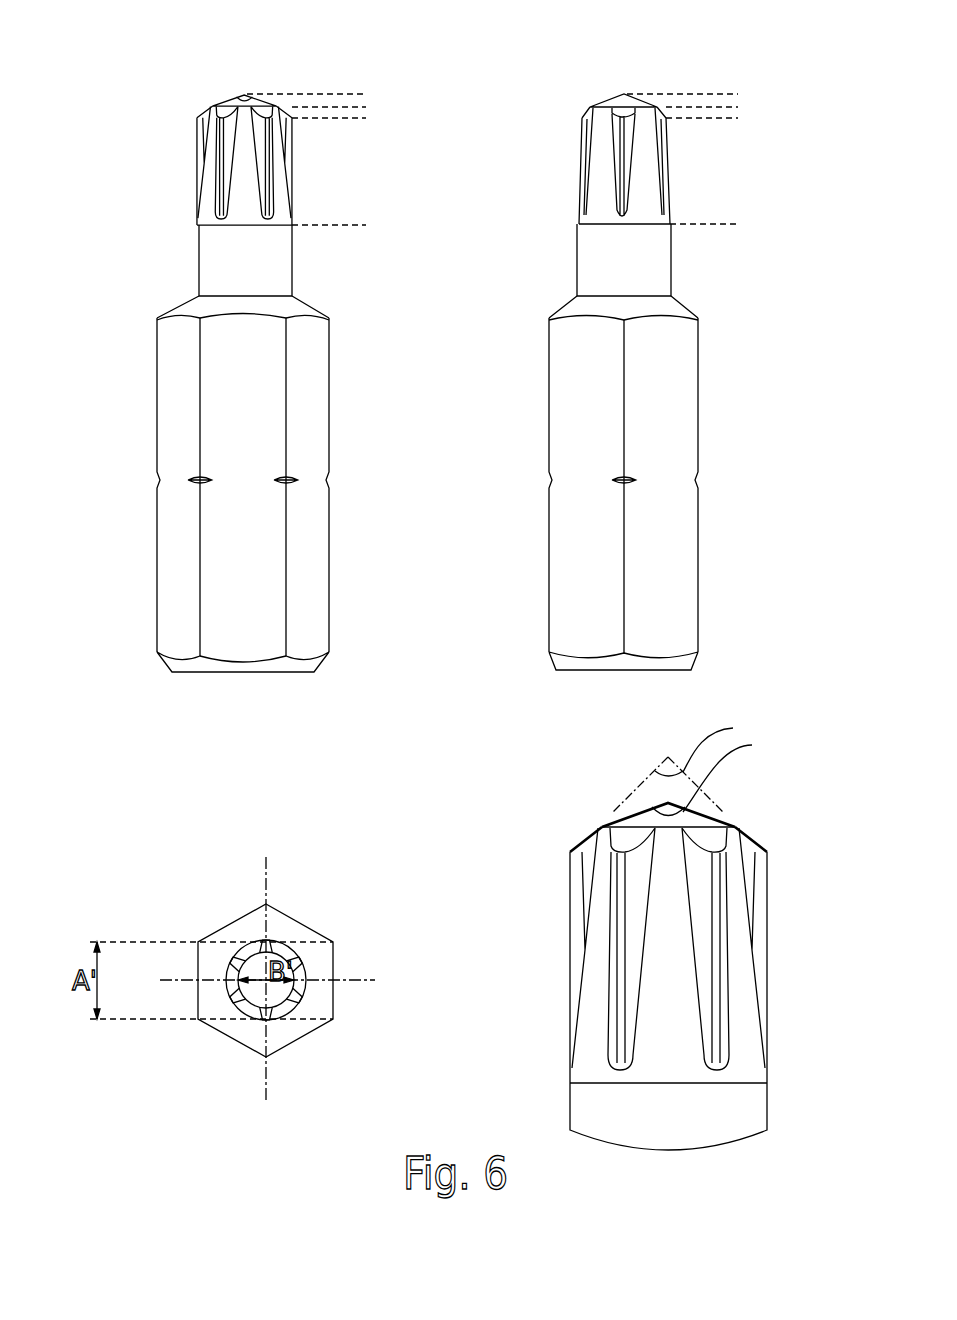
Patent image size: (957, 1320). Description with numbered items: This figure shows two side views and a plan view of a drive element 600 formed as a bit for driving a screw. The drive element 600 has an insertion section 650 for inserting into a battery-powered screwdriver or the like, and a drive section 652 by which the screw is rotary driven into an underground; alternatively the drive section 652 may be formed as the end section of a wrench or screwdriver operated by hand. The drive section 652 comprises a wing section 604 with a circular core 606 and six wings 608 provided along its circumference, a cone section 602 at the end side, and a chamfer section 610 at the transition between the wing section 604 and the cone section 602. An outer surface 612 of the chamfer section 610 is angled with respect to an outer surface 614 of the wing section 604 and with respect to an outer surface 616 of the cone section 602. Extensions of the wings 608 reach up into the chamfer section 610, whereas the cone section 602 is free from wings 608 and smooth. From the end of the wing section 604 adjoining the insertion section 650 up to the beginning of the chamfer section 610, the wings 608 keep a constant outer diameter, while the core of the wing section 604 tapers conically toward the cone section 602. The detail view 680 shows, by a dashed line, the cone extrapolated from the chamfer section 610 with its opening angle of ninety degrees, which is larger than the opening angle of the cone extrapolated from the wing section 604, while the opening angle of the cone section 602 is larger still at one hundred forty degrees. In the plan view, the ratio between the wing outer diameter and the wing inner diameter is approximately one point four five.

The drive element 600 is at (332, 682).
The cone section 602 is at (366, 94).
The wing section 604 is at (366, 118).
The circular core 606 is at (253, 963).
The wings 608 is at (267, 941).
The chamfer section 610 is at (366, 118).
The outer surface of the chamfer section 612 is at (210, 106).
The outer surface of the wing section 614 is at (197, 160).
The outer surface of the cone section 616 is at (240, 94).
The insertion section 650 is at (132, 298).
The drive section 652 is at (132, 81).
The detail view 680 is at (564, 830).